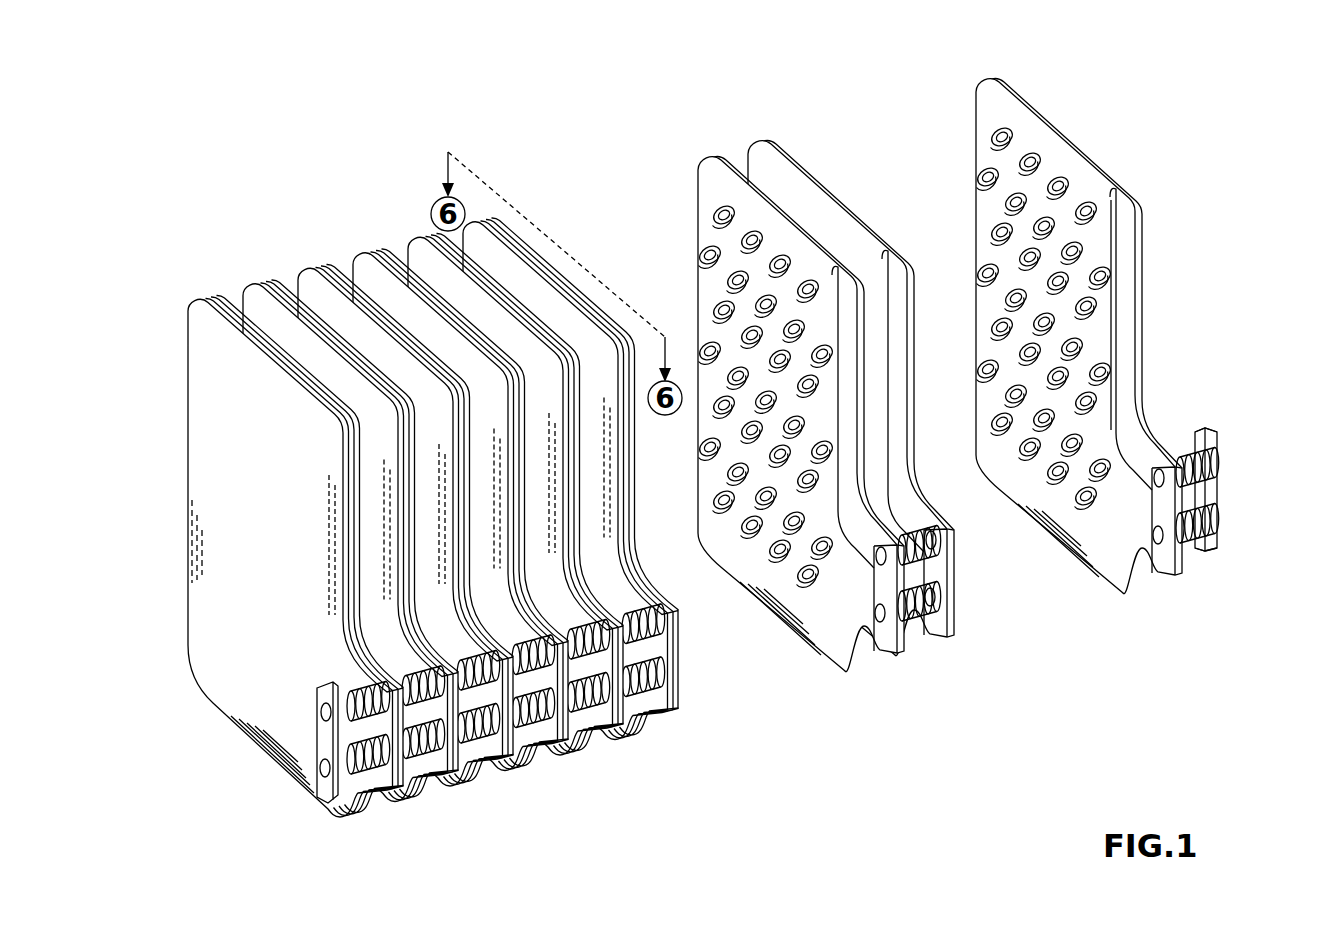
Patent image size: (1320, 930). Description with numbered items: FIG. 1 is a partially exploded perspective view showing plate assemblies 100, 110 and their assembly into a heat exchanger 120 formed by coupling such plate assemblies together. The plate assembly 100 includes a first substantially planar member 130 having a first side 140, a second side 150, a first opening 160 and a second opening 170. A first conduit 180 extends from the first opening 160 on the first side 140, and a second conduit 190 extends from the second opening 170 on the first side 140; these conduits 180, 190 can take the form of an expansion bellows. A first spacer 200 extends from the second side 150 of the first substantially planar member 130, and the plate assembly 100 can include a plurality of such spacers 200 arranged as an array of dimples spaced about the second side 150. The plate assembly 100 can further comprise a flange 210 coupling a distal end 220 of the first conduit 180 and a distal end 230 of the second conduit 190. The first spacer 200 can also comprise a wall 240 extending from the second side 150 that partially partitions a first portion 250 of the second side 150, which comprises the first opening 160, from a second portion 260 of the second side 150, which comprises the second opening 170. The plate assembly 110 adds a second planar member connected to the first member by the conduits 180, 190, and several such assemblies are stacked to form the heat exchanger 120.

The plate assembly 100 is at (1125, 326).
The plate assembly 110 is at (760, 106).
The heat exchanger 120 is at (532, 160).
The first substantially planar member 130 is at (1094, 336).
The first side 140 is at (1144, 243).
The second side 150 is at (1107, 542).
The first opening 160 is at (1193, 481).
The second opening 170 is at (1151, 552).
The first conduit 180 is at (1195, 448).
The second conduit 190 is at (1213, 546).
The first spacer 200 is at (1112, 372).
The flange 210 is at (1219, 506).
The distal end 220 is at (1211, 431).
The distal end 230 is at (1213, 534).
The wall 240 is at (1118, 307).
The first portion 250 is at (1128, 338).
The second portion 260 is at (1100, 432).